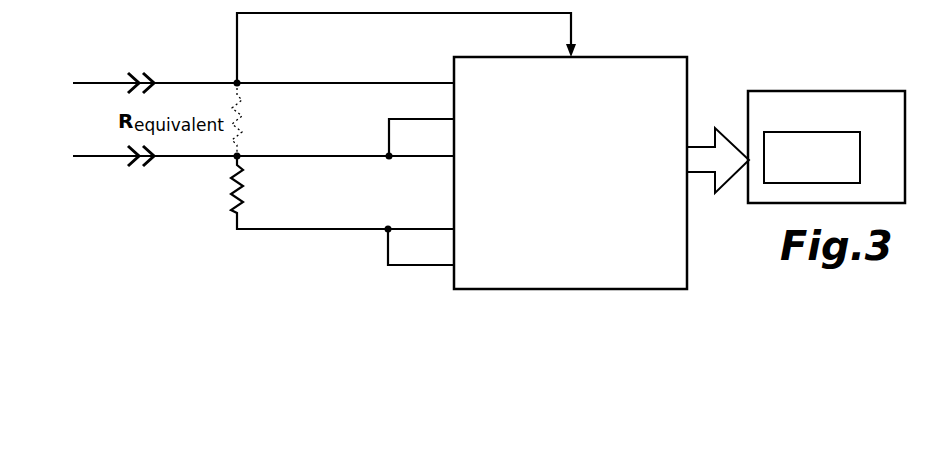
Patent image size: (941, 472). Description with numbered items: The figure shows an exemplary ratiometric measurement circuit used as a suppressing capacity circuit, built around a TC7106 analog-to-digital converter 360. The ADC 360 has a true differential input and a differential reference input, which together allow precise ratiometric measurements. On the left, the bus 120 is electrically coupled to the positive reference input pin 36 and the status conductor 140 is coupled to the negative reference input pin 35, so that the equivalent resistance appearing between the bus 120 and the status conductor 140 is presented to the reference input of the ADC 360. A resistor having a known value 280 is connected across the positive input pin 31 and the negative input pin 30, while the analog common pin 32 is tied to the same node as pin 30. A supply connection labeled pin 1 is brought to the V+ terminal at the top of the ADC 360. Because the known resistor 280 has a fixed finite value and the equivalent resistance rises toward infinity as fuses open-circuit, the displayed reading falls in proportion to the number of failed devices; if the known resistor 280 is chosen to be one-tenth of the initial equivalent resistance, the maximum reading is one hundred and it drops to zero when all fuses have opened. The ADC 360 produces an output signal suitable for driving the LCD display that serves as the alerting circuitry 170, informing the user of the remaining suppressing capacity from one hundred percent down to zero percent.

The bus 120 is at (95, 83).
The status conductor 140 is at (95, 156).
The resistor having a known value 280 is at (243, 199).
The analog-to-digital converter 360 is at (645, 57).
The alerting circuitry 170 is at (823, 91).
The V+ supply pin 1 is at (412, 48).
The VREF+ pin 36 is at (427, 73).
The VREF- pin 35 is at (421, 129).
The VIN+ pin 31 is at (427, 147).
The VIN- pin 30 is at (427, 220).
The analog common pin 32 is at (421, 247).